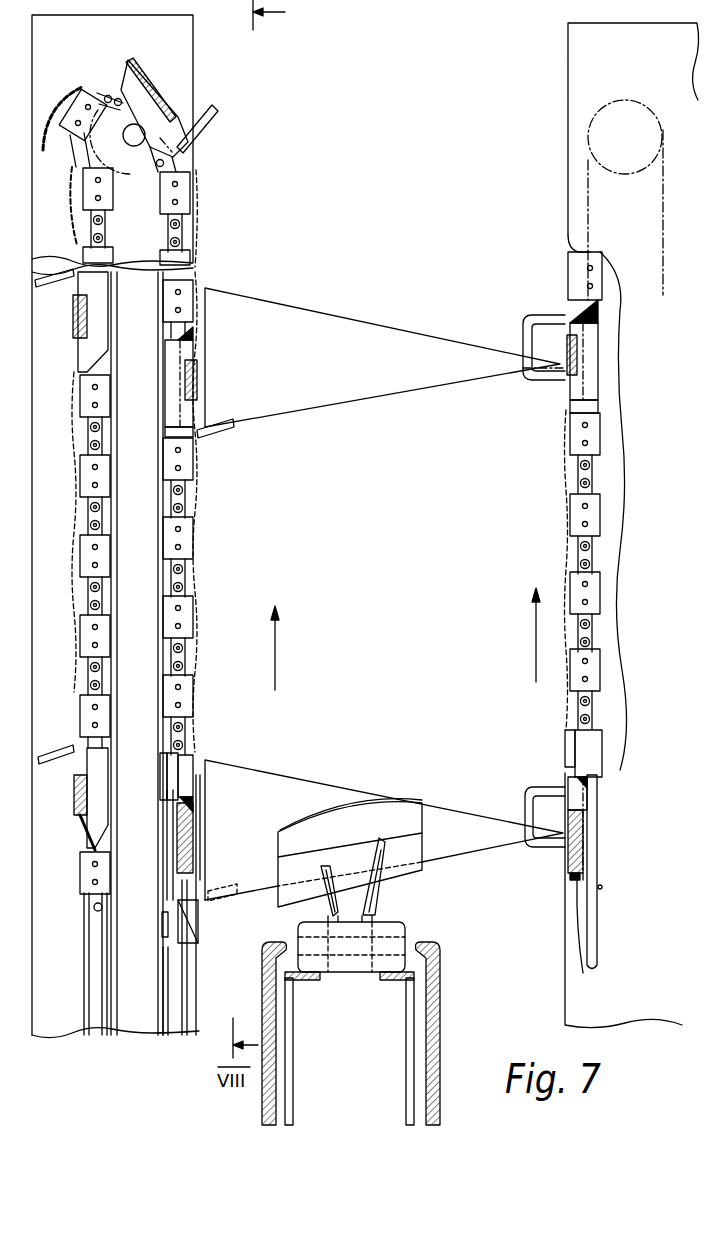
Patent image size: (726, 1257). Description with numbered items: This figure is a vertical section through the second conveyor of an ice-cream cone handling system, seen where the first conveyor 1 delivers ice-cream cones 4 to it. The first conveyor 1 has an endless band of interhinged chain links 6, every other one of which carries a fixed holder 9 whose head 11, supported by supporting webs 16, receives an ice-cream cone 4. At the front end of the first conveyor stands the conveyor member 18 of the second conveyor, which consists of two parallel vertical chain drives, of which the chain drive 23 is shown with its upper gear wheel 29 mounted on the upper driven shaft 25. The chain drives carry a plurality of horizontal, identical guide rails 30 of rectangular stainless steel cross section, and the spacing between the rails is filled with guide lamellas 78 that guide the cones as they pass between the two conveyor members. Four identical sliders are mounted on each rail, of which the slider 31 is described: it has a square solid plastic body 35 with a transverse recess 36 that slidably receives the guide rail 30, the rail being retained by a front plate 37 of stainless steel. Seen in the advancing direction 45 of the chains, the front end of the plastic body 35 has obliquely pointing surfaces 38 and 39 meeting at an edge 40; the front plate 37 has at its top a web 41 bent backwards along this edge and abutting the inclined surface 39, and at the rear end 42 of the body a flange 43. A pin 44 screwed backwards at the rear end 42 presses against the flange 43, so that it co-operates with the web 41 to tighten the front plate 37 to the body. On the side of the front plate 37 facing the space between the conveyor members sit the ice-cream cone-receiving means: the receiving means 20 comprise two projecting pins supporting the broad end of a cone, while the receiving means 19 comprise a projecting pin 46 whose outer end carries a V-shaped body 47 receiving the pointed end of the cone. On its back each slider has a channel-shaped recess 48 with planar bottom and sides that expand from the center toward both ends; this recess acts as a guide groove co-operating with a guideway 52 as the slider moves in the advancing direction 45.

The first conveyor 1 is at (433, 942).
The ice-cream cone 4 is at (307, 323).
The chain link 6 is at (361, 1020).
The holder 9 is at (367, 920).
The head 11 is at (413, 848).
The supporting webs 16 is at (328, 880).
The conveyor member 18 is at (143, 508).
The ice-cream cone-receiving means 19 is at (552, 855).
The ice-cream cone-receiving means 20 is at (230, 117).
The chain drive 23 is at (188, 645).
The upper driven shaft 25 is at (136, 134).
The upper gear wheel 29 is at (160, 128).
The guide rail 30 is at (188, 95).
The slider 31 is at (207, 777).
The plastic body 35 is at (187, 148).
The transverse recess 36 is at (180, 870).
The front plate 37 is at (207, 885).
The obliquely pointing surface 38 is at (173, 805).
The inclined surface 39 is at (197, 815).
The edge 40 is at (590, 813).
The web 41 is at (593, 780).
The rear end 42 is at (175, 897).
The flange 43 is at (193, 930).
The pin 44 is at (600, 887).
The advancing direction 45 is at (280, 632).
The projecting pin 46 is at (530, 842).
The V-shaped body 47 is at (533, 810).
The recess 48 is at (567, 388).
The guideway 52 is at (173, 983).
The guide lamellas 78 is at (72, 563).